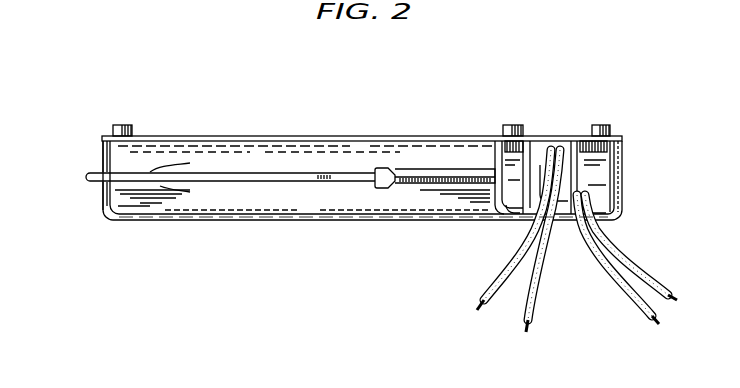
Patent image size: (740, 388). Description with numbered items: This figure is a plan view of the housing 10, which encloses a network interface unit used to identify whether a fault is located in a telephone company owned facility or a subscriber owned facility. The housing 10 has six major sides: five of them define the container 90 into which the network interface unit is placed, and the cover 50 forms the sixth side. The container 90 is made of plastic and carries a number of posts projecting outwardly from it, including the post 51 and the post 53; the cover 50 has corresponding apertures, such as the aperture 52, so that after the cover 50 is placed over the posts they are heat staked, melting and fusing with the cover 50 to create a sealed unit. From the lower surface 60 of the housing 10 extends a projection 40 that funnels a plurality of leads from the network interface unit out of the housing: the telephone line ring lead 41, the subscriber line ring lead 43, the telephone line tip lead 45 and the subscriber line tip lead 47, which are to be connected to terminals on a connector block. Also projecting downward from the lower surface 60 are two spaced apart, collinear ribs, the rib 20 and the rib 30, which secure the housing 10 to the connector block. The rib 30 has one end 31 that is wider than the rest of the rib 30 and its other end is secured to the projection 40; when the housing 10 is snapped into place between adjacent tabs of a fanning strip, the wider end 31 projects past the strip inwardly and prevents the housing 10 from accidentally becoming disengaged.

The housing 10 is at (195, 223).
The rib 20 is at (84, 182).
The rib 30 is at (440, 172).
The end of rib 31 is at (387, 174).
The projection 40 is at (622, 180).
The telephone line ring lead 41 is at (640, 276).
The subscriber line ring lead 43 is at (632, 298).
The telephone line tip lead 45 is at (530, 296).
The subscriber line tip lead 47 is at (505, 262).
The cover 50 is at (314, 137).
The post 51 is at (118, 125).
The aperture 52 is at (602, 125).
The post 53 is at (510, 125).
The lower surface 60 is at (257, 208).
The container 90 is at (105, 150).